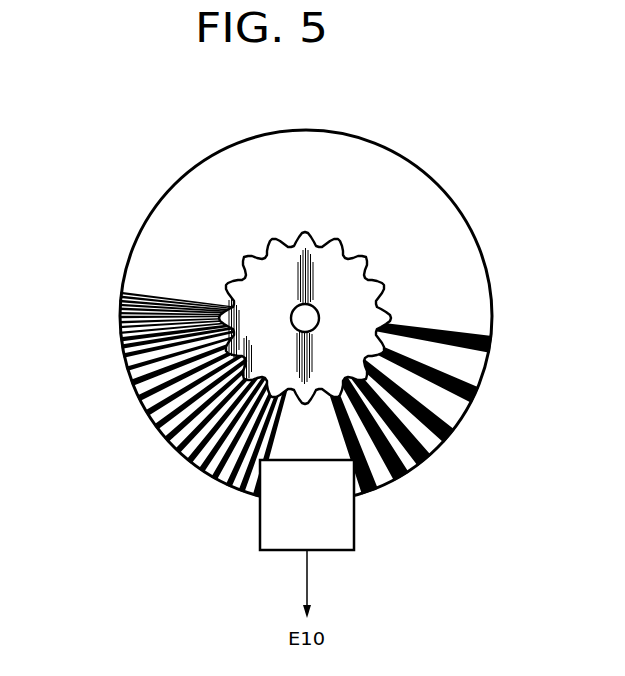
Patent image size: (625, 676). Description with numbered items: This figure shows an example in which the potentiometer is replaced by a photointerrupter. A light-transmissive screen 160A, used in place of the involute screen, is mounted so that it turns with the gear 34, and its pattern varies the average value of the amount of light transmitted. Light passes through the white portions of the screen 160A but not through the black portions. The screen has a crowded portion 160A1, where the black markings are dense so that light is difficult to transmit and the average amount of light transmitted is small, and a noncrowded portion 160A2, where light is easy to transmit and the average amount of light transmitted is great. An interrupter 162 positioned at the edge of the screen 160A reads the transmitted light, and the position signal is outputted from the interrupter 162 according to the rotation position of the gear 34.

The gear 34 is at (349, 273).
The light-transmissive screen 160A is at (470, 295).
The crowded portion 160A1 is at (103, 300).
The noncrowded portion 160A2 is at (500, 376).
The interrupter 162 is at (355, 540).